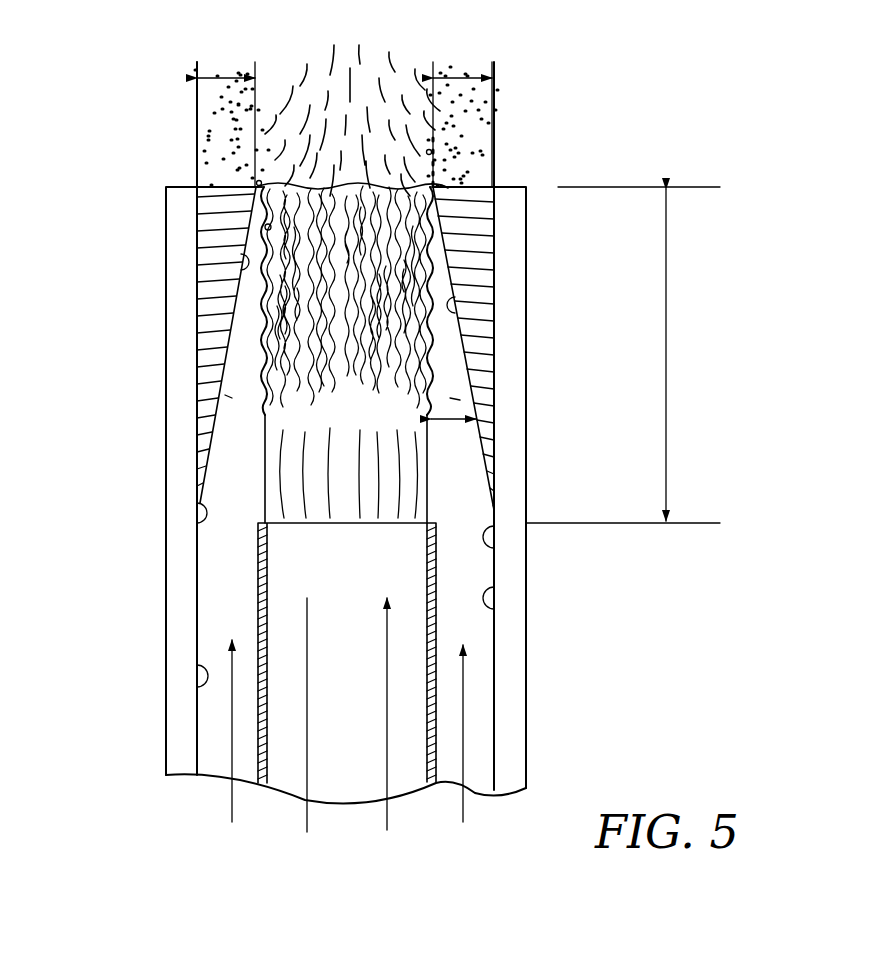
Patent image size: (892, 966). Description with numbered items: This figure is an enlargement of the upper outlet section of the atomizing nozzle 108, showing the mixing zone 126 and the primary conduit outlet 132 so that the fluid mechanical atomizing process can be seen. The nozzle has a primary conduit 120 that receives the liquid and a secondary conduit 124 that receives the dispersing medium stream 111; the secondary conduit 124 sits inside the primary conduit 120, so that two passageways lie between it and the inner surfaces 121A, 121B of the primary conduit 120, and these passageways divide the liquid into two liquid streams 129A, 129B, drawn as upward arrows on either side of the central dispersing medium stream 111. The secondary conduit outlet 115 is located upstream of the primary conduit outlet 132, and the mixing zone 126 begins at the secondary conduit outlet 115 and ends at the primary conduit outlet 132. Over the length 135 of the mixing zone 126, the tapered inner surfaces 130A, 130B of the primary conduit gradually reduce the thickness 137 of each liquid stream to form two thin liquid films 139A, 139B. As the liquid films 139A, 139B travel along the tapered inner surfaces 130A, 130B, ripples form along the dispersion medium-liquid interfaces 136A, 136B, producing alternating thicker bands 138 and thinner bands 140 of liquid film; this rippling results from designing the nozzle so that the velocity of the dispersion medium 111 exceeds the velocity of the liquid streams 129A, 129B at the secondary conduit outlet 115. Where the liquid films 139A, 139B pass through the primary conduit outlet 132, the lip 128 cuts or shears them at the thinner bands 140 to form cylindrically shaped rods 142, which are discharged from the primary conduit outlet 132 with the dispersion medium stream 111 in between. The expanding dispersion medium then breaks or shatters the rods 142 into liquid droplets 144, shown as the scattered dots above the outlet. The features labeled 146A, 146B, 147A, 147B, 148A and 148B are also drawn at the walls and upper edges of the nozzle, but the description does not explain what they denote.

The atomizing nozzle 108 is at (615, 693).
The dispersing medium stream 111 is at (389, 818).
The secondary conduit outlet 115 is at (280, 518).
The primary conduit 120 is at (168, 752).
The inner surface of the primary conduit 121A is at (200, 690).
The inner surface of the primary conduit 121B is at (490, 610).
The secondary conduit 124 is at (258, 626).
The mixing zone 126 is at (246, 318).
The lip 128 is at (256, 186).
The liquid stream 129A is at (232, 818).
The liquid stream 129B is at (463, 818).
The tapered inner surface 130A is at (250, 273).
The tapered inner surface 130B is at (490, 324).
The primary conduit outlet 132 is at (260, 186).
The length of the mixing zone 135 is at (667, 318).
The dispersion medium-liquid interface 136A is at (266, 366).
The dispersion medium-liquid interface 136B is at (433, 370).
The thickness of the liquid stream 137 is at (447, 424).
The thicker bands 138 is at (435, 268).
The liquid film 139A is at (247, 398).
The liquid film 139B is at (447, 397).
The thinner bands 140 is at (493, 243).
The cylindrically shaped rods 142 is at (432, 152).
The liquid droplets 144 is at (458, 106).
The cooling channel 146A is at (200, 503).
The cooling channel 146B is at (488, 552).
The electrode thickness 147A is at (233, 78).
The electrode thickness 147B is at (460, 78).
The electrode top edge 148A is at (256, 188).
The electrode top edge 148B is at (456, 186).